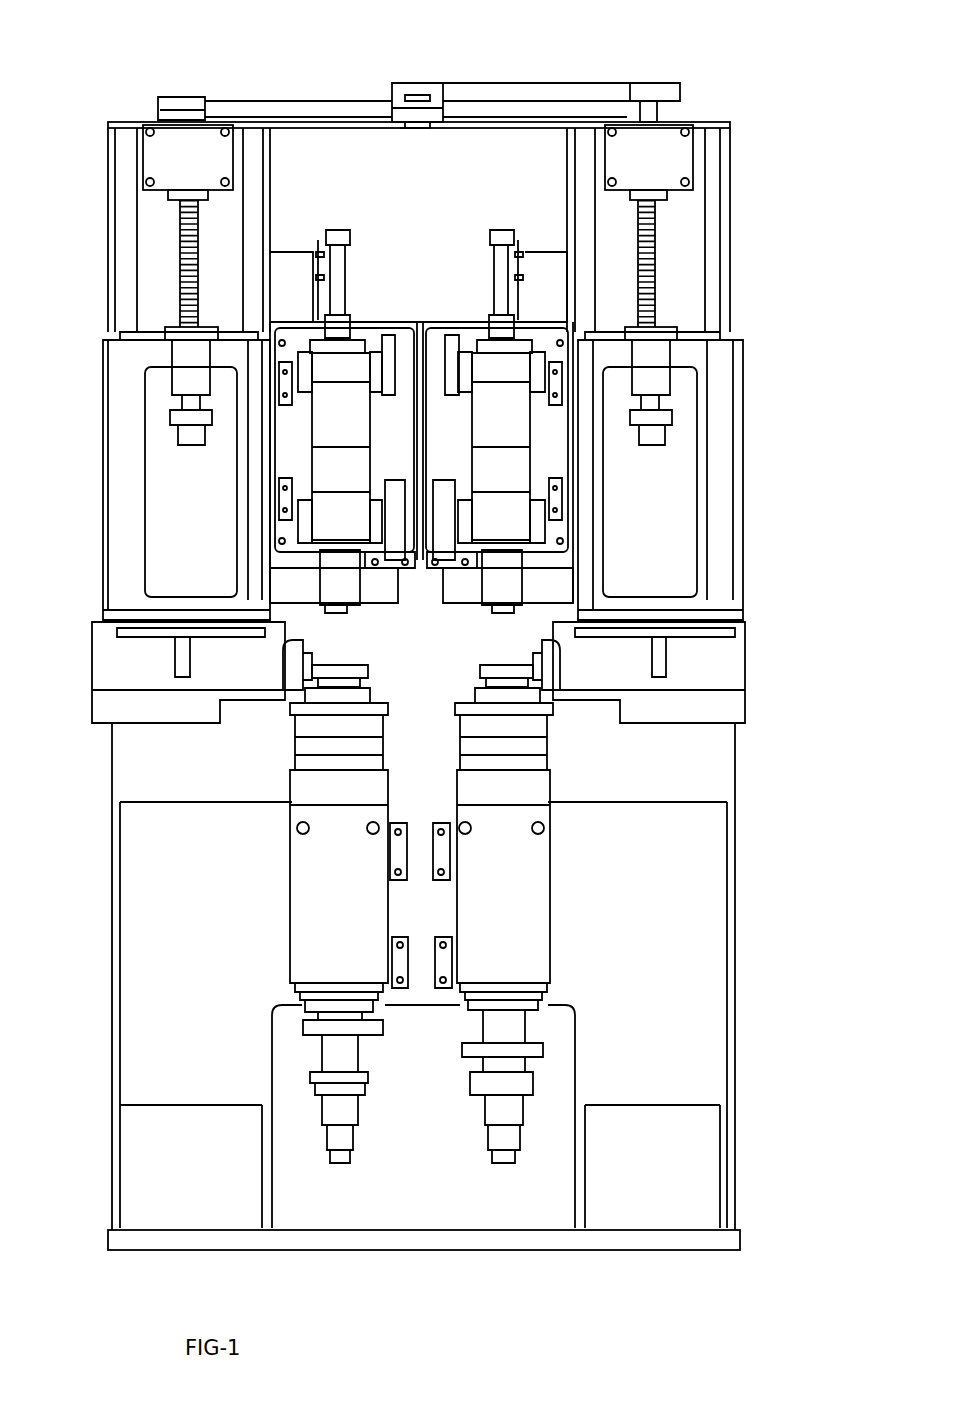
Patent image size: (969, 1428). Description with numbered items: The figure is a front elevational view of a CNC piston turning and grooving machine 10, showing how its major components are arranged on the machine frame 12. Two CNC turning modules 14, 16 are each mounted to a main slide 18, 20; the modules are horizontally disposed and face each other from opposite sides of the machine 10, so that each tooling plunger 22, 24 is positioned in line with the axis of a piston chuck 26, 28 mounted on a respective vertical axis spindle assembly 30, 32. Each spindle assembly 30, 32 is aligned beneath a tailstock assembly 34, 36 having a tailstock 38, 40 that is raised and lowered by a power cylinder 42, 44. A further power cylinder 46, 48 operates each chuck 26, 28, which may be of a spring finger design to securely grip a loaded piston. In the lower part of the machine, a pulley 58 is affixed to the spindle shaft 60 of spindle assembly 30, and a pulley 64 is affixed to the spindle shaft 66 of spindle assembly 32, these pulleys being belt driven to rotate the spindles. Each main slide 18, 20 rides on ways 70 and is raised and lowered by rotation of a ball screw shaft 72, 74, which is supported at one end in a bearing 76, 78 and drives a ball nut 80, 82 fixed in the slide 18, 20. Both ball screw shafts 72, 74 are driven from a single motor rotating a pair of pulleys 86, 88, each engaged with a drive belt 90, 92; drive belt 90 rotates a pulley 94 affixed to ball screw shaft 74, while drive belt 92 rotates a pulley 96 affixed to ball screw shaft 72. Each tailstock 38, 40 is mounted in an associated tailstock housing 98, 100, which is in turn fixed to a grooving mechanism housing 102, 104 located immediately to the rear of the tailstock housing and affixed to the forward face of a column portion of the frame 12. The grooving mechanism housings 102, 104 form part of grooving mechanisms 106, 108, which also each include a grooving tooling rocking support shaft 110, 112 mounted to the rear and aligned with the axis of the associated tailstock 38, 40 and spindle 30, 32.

The piston turning and grooving machine 10 is at (63, 458).
The machine frame 12 is at (112, 118).
The CNC turning module 14 is at (70, 702).
The CNC turning module 16 is at (750, 662).
The main slide 18 is at (103, 405).
The main slide 20 is at (743, 490).
The tooling plunger 22 is at (287, 648).
The tooling plunger 24 is at (548, 692).
The piston chuck 26 is at (367, 670).
The piston chuck 28 is at (477, 670).
The vertical axis spindle assembly 30 is at (290, 733).
The vertical axis spindle assembly 32 is at (552, 755).
The tailstock assembly 34 is at (290, 435).
The tailstock assembly 36 is at (560, 462).
The tailstock 38 is at (323, 613).
The tailstock 40 is at (517, 613).
The power cylinder 42 is at (335, 245).
The power cylinder 44 is at (490, 255).
The power cylinder 46 is at (320, 1162).
The power cylinder 48 is at (493, 1162).
The pulley 58 is at (300, 1020).
The spindle shaft 60 is at (320, 1045).
The pulley 64 is at (545, 1050).
The spindle shaft 66 is at (528, 1030).
The ways 70 is at (255, 124).
The ball screw shaft 72 is at (180, 214).
The ball screw shaft 74 is at (660, 258).
The bearing 76 is at (165, 133).
The bearing 78 is at (670, 130).
The ball nut 80 is at (173, 375).
The ball nut 82 is at (670, 380).
The pulley 86 is at (420, 85).
The pulley 88 is at (443, 116).
The drive belt 90 is at (548, 83).
The drive belt 92 is at (350, 100).
The pulley 94 is at (660, 83).
The pulley 96 is at (170, 97).
The tailstock housing 98 is at (290, 455).
The tailstock housing 100 is at (560, 505).
The grooving mechanism housing 102 is at (400, 355).
The grooving mechanism housing 104 is at (432, 357).
The grooving mechanism 106 is at (270, 537).
The grooving mechanism 108 is at (567, 408).
The grooving tooling rocking support shaft 110 is at (290, 563).
The grooving tooling rocking support shaft 112 is at (560, 558).